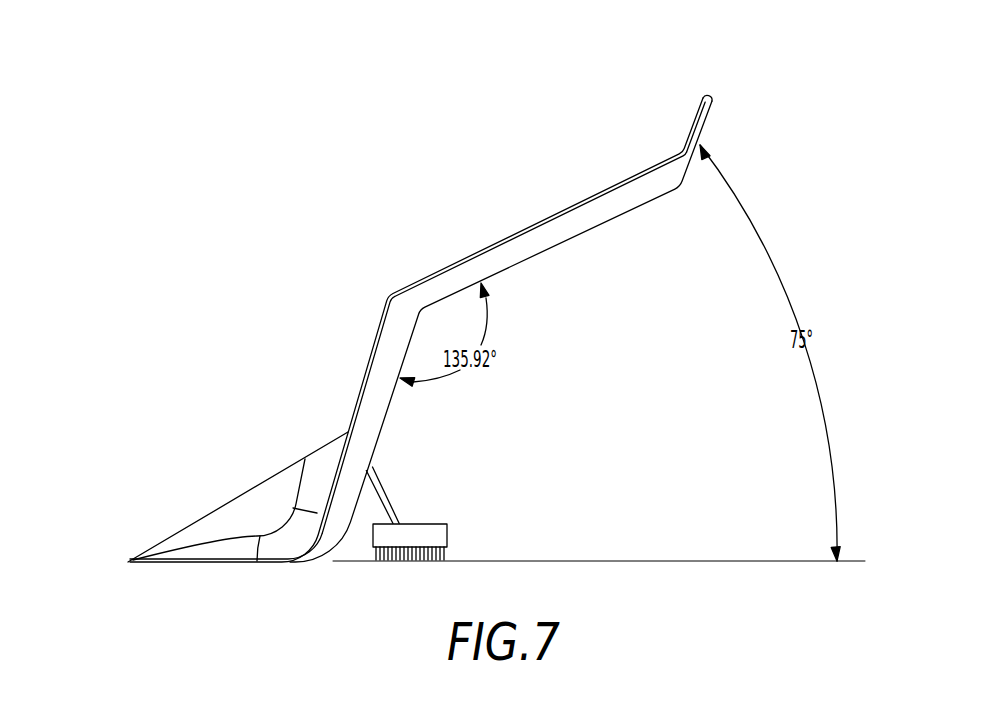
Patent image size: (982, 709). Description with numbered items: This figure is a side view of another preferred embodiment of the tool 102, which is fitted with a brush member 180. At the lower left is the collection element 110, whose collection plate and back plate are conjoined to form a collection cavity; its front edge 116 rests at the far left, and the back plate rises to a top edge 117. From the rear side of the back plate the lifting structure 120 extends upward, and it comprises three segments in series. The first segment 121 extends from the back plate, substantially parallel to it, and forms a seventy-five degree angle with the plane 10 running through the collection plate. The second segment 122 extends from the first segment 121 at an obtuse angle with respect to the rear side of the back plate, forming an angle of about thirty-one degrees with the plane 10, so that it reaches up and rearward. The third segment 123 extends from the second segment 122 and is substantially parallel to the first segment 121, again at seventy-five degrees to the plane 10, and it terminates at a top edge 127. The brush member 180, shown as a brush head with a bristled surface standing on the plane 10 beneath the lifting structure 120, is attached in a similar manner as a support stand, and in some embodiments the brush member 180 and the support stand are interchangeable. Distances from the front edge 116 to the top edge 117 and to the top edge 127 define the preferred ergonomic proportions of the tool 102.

The tool 102 is at (400, 306).
The lifting structure 120 is at (568, 257).
The first segment 121 is at (367, 355).
The second segment 122 is at (516, 232).
The third segment 123 is at (692, 117).
The top edge of the third segment 127 is at (708, 95).
The top edge of the back plate 117 is at (348, 431).
The collection element 110 is at (283, 527).
The front edge of the collection plate 116 is at (128, 563).
The brush member 180 is at (435, 522).
The plane 10 is at (697, 562).